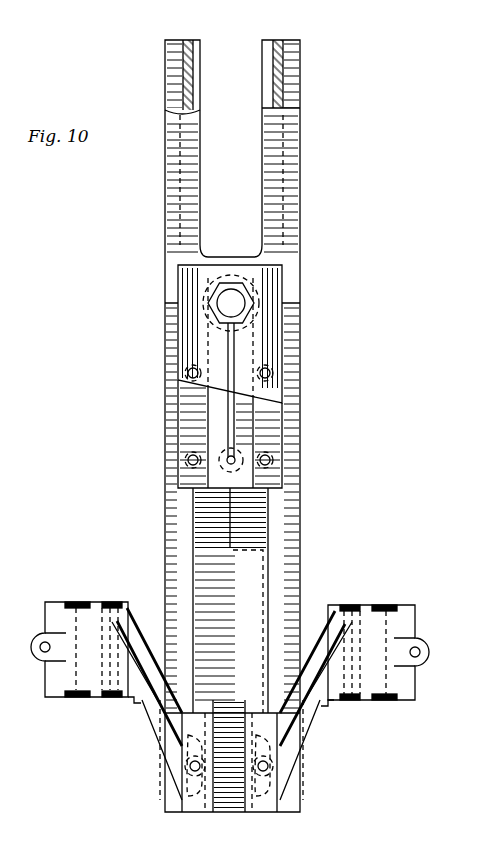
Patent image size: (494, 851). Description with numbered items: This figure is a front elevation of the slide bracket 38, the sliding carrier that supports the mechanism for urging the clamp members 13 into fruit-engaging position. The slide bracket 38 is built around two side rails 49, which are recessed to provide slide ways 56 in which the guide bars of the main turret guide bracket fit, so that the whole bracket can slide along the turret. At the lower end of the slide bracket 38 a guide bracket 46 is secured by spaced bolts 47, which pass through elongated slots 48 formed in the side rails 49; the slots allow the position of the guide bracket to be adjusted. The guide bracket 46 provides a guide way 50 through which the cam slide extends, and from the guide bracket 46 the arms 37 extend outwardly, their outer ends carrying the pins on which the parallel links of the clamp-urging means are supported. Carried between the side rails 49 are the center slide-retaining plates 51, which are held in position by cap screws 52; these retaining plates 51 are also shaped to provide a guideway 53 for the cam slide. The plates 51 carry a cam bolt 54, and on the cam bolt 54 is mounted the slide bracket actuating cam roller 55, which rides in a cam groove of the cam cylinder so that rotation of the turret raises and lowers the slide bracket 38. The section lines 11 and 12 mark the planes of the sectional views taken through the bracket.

The section line 11- 11 is at (31, 586).
The section line 12- 12 is at (355, 90).
The clamp members 13 is at (224, 18).
The arms 37 is at (155, 718).
The slide bracket 38 is at (300, 522).
The guide bracket 46 is at (210, 805).
The bolts 47 is at (193, 767).
The elongated slots 48 is at (188, 790).
The side rails 49 is at (176, 562).
The guide way 50 is at (236, 722).
The center slide-retaining plates 51 is at (275, 345).
The cap screws 52 is at (283, 371).
The guideway 53 is at (253, 432).
The cam bolt 54 is at (233, 303).
The cam roller 55 is at (253, 292).
The slide ways 56 is at (172, 50).